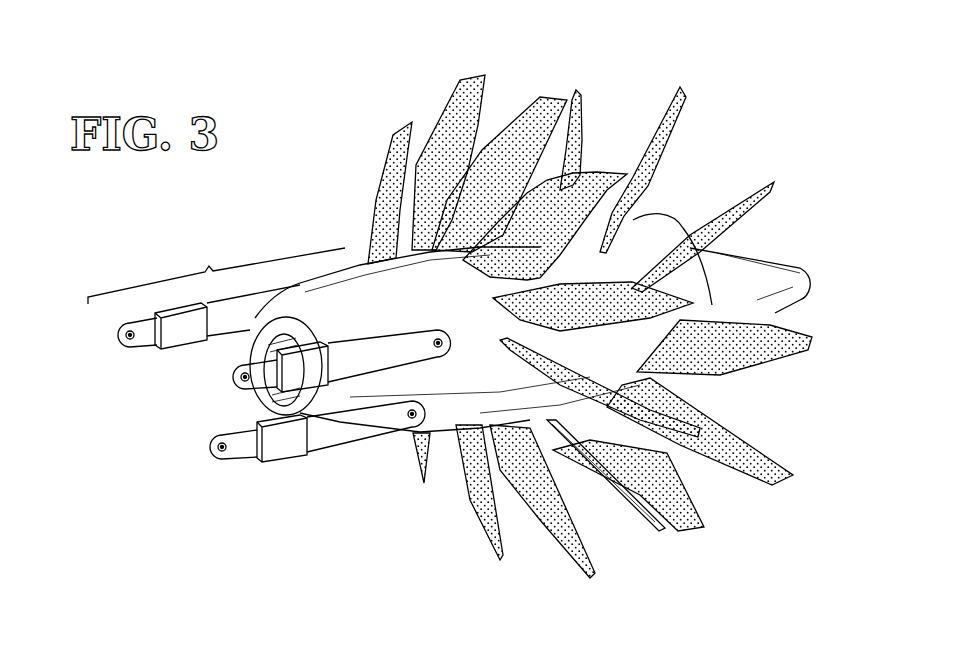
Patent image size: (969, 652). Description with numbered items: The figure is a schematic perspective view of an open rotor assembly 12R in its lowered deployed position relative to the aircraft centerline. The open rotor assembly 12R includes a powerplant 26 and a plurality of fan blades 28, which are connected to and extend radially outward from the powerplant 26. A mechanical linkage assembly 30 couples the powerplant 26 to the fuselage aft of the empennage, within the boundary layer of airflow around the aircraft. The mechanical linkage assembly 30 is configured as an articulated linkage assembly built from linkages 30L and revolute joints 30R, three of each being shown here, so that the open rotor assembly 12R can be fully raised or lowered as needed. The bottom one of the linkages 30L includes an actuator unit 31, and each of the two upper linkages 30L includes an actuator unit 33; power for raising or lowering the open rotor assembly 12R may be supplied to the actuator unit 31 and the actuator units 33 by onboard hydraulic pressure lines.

The open rotor assembly 12R is at (745, 64).
The powerplant 26 is at (424, 308).
The fan blades 28 is at (459, 162).
The mechanical linkage assembly 30 is at (260, 368).
The linkages 30L is at (128, 323).
The revolute joints 30R is at (112, 340).
The actuator unit 31 is at (283, 443).
The actuator unit 33 is at (170, 340).